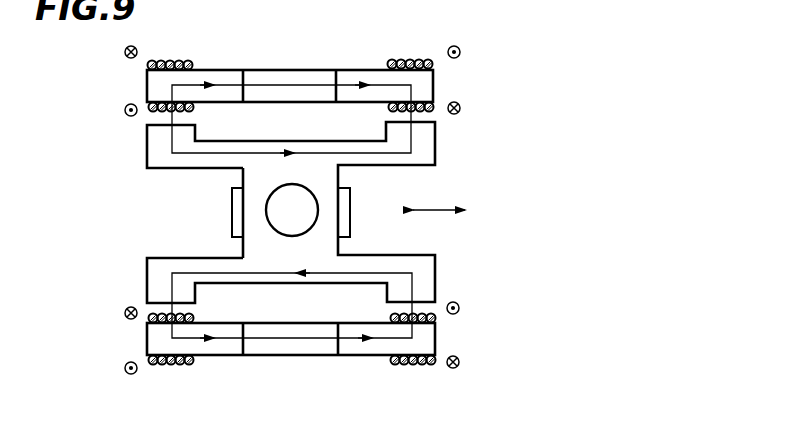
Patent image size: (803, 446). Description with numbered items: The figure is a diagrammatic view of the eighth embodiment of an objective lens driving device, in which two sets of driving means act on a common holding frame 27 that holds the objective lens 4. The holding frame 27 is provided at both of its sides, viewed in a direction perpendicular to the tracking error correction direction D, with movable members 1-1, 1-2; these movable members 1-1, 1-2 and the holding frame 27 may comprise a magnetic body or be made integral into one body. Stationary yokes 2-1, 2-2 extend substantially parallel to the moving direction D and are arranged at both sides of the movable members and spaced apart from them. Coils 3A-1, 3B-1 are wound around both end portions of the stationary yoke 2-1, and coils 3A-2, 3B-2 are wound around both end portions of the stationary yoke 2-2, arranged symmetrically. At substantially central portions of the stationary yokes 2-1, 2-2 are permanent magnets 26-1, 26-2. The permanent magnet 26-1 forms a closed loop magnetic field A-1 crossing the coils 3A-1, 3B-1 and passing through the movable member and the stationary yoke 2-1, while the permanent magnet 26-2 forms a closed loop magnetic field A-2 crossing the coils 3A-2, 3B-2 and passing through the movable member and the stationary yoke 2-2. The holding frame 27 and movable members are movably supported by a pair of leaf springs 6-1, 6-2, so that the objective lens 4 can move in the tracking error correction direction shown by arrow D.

The stationary yoke 2-1 is at (213, 77).
The permanent magnet 26-1 is at (298, 82).
The coil 3A-1 is at (178, 61).
The coil 3B-1 is at (425, 48).
The closed loop magnetic field A-1 is at (172, 148).
The movable member 1-1 is at (435, 157).
The holding frame 27 is at (253, 239).
The closed loop magnetic field A-2 is at (173, 288).
The movable member 1-2 is at (436, 262).
The leaf spring 6-2 is at (232, 200).
The leaf spring 6-1 is at (350, 200).
The objective lens 4 is at (302, 214).
The moving direction D is at (440, 208).
The stationary yoke 2-2 is at (233, 345).
The permanent magnet 26-2 is at (307, 343).
The coil 3A-2 is at (180, 366).
The coil 3B-2 is at (425, 366).